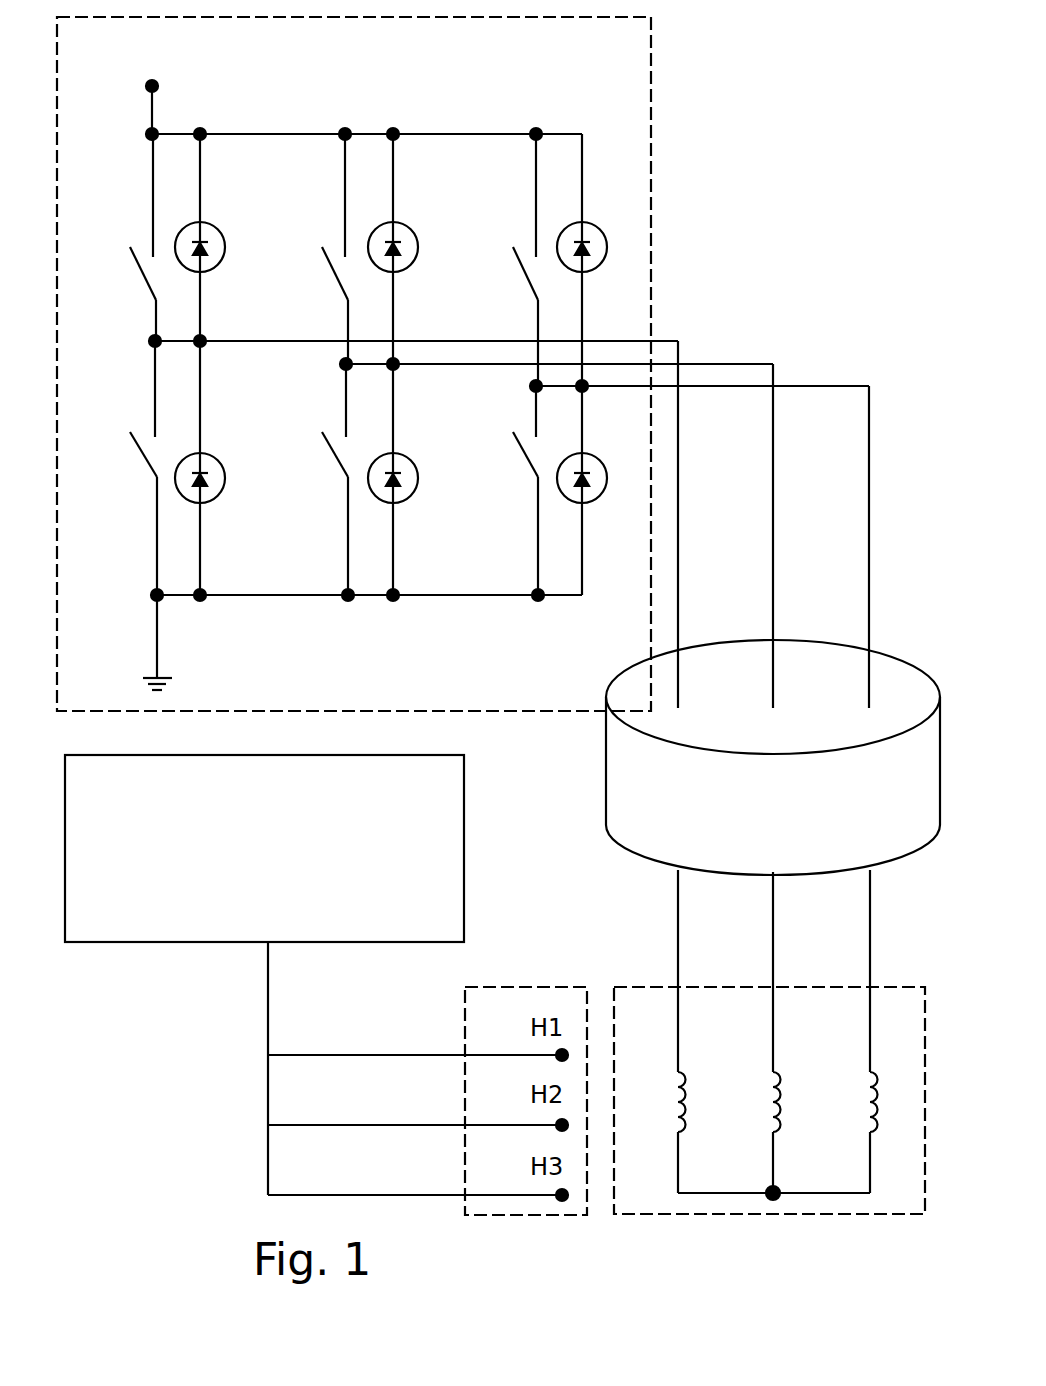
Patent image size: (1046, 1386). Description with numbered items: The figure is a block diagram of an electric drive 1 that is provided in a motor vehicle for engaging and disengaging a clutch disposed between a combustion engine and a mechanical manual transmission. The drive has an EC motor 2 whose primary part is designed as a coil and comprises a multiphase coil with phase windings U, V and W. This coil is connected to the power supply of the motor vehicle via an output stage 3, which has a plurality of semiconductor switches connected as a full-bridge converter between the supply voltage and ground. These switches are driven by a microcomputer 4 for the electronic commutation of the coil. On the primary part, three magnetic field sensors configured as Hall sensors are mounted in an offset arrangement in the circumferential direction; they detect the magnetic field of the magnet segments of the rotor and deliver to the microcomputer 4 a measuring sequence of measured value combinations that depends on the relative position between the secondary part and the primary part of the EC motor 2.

The electric drive 1 is at (788, 146).
The EC motor 2 is at (752, 1207).
The output stage 3 is at (651, 163).
The microcomputer 4 is at (282, 855).